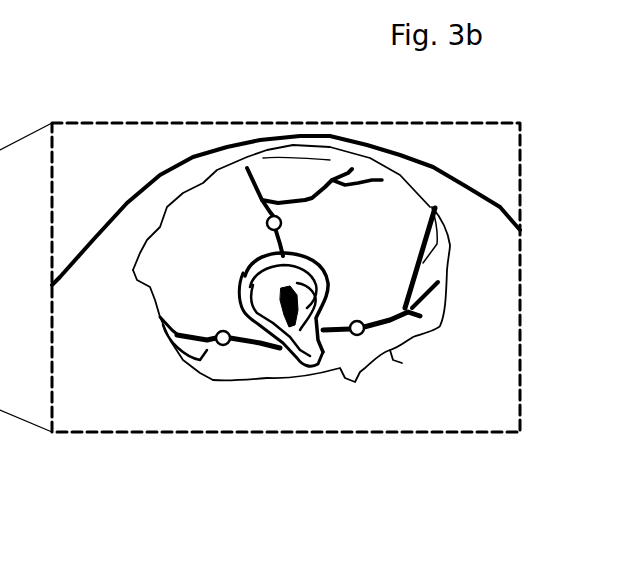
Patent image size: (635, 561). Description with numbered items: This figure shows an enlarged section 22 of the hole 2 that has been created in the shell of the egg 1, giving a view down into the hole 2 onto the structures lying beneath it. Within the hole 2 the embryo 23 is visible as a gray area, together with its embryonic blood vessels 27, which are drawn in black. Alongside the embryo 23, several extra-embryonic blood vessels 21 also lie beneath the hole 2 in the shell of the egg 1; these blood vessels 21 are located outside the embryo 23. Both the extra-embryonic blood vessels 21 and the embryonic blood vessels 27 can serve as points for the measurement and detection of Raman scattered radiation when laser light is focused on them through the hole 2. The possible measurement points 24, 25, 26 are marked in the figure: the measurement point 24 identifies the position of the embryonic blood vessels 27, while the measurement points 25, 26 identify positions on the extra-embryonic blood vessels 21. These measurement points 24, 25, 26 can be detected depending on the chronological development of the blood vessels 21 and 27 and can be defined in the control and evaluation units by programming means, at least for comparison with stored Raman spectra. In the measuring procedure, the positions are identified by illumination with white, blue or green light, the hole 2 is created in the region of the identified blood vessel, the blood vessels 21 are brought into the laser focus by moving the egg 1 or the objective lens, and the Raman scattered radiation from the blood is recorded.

The egg 1 is at (490, 190).
The hole 2 is at (213, 380).
The blood vessel 21 is at (402, 363).
The enlarged section 22 is at (160, 123).
The embryo 23 is at (267, 267).
The measurement point 24 is at (243, 277).
The measurement point 25 is at (281, 228).
The measurement point 26 is at (316, 210).
The embryonic blood vessel 27 is at (243, 307).